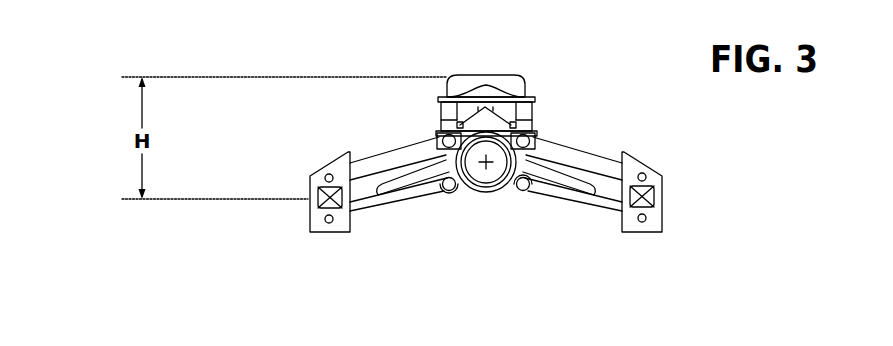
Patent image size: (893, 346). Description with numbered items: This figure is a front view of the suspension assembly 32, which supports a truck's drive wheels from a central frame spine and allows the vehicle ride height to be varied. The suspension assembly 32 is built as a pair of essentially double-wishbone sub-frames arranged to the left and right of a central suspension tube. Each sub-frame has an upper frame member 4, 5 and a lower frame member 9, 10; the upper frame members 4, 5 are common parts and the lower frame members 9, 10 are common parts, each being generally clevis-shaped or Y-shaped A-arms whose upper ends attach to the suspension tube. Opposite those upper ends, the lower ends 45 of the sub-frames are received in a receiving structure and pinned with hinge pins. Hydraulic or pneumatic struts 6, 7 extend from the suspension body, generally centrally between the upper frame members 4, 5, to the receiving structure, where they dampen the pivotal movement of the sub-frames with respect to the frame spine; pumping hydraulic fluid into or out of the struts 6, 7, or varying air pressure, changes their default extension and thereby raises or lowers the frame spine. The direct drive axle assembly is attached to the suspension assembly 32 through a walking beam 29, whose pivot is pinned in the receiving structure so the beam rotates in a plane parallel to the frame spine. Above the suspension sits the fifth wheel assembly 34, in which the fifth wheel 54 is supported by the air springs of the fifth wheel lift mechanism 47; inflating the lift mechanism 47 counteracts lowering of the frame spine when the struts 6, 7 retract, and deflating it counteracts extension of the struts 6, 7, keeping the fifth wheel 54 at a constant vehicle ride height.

The upper frame member 4 is at (408, 160).
The upper frame member 5 is at (588, 160).
The extensible strut 6 is at (577, 186).
The extensible strut 7 is at (395, 178).
The lower frame member 9 is at (385, 208).
The lower frame member 10 is at (604, 216).
The walking beam 29 is at (316, 193).
The suspension assembly 32 is at (446, 234).
The fifth wheel assembly 34 is at (553, 122).
The lower end 45 is at (315, 218).
The fifth wheel lift mechanism 47 is at (504, 186).
The fifth wheel 54 is at (508, 86).